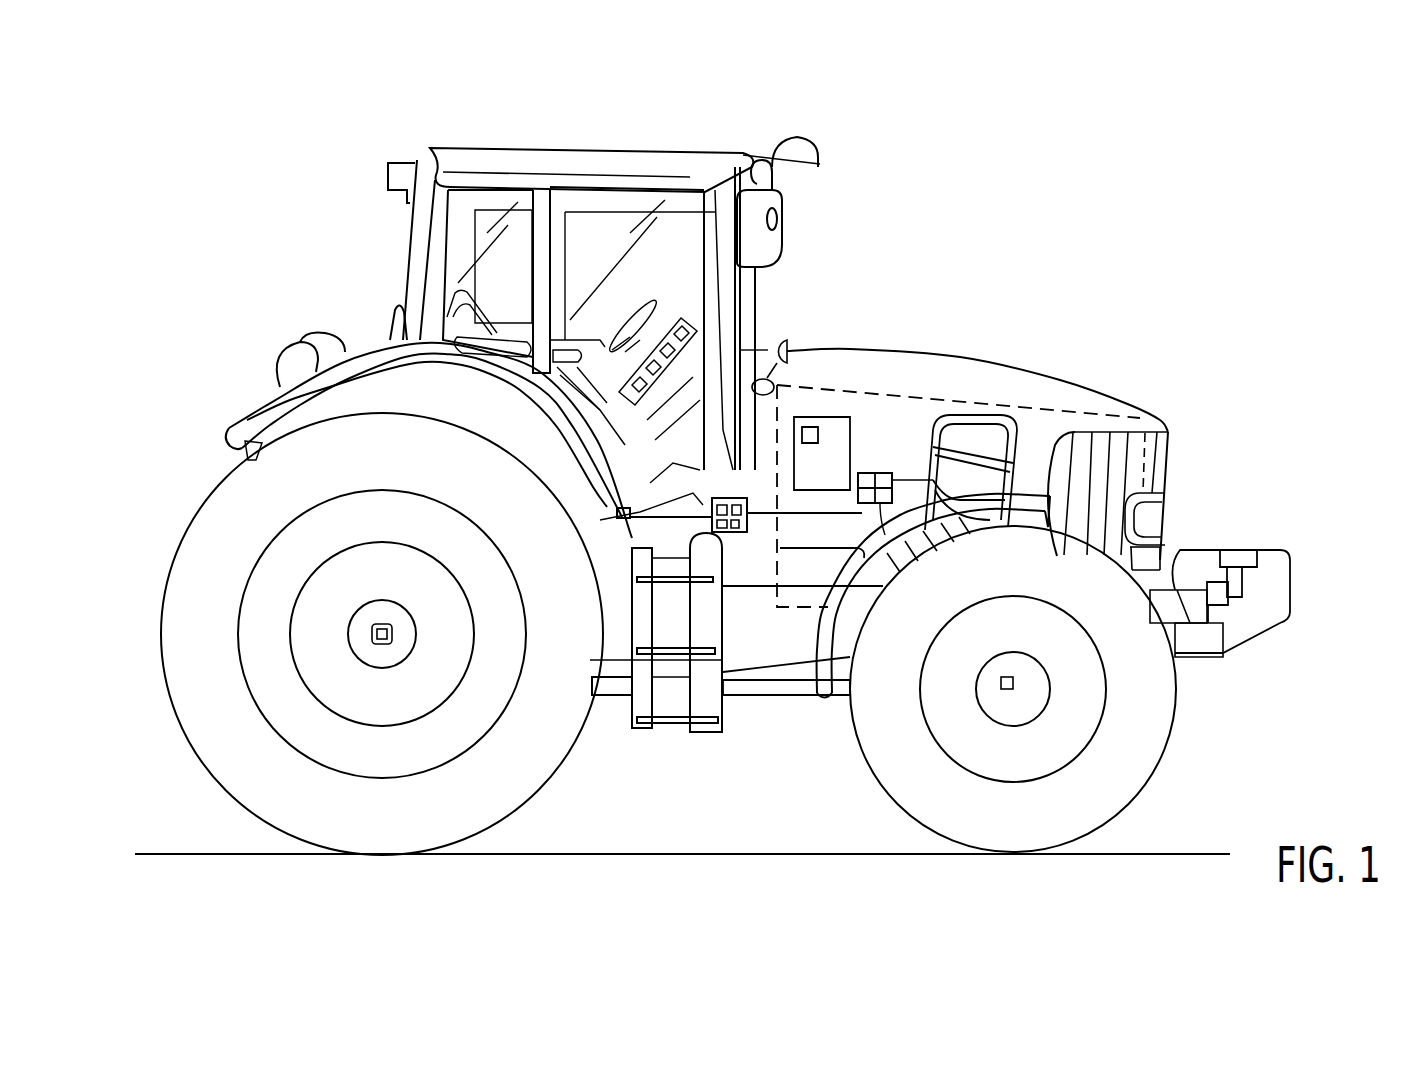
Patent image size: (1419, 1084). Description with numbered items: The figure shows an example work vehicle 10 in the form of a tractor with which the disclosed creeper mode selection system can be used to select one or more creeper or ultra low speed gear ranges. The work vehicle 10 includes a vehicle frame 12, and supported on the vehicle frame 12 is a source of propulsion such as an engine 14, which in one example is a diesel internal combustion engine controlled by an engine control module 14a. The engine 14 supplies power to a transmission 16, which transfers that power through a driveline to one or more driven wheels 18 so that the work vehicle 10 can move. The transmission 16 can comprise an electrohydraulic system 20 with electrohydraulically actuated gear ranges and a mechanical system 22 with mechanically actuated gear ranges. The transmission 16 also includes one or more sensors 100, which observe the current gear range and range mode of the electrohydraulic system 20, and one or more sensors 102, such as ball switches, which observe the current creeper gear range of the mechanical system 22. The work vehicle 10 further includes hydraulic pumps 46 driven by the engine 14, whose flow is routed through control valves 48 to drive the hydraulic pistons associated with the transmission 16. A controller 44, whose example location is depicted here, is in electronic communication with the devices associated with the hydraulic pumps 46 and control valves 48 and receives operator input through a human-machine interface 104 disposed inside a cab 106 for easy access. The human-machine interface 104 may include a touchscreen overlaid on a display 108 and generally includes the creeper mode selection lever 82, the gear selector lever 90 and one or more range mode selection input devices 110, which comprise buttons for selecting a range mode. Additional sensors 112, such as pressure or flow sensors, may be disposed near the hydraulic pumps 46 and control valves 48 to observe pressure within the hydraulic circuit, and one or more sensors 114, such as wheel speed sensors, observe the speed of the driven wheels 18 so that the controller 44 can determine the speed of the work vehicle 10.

The work vehicle 10 is at (1090, 170).
The vehicle frame 12 is at (1195, 653).
The engine 14 is at (803, 408).
The engine control module 14a is at (818, 435).
The transmission 16 is at (718, 494).
The driven wheels 18 is at (381, 668).
The electrohydraulic system 20 is at (710, 527).
The mechanical system 22 is at (747, 512).
The controller 44 is at (880, 537).
The hydraulic pumps 46 is at (857, 490).
The control valves 48 is at (858, 507).
The creeper mode selection lever 82 is at (637, 390).
The gear selector lever 90 is at (630, 362).
The sensors 100 is at (630, 540).
The sensors 102 is at (763, 540).
The human-machine interface 104 is at (690, 310).
The cab 106 is at (588, 148).
The display 108 is at (673, 360).
The range mode selection input devices 110 is at (677, 317).
The sensors 112 is at (933, 483).
The sensors 114 is at (392, 634).